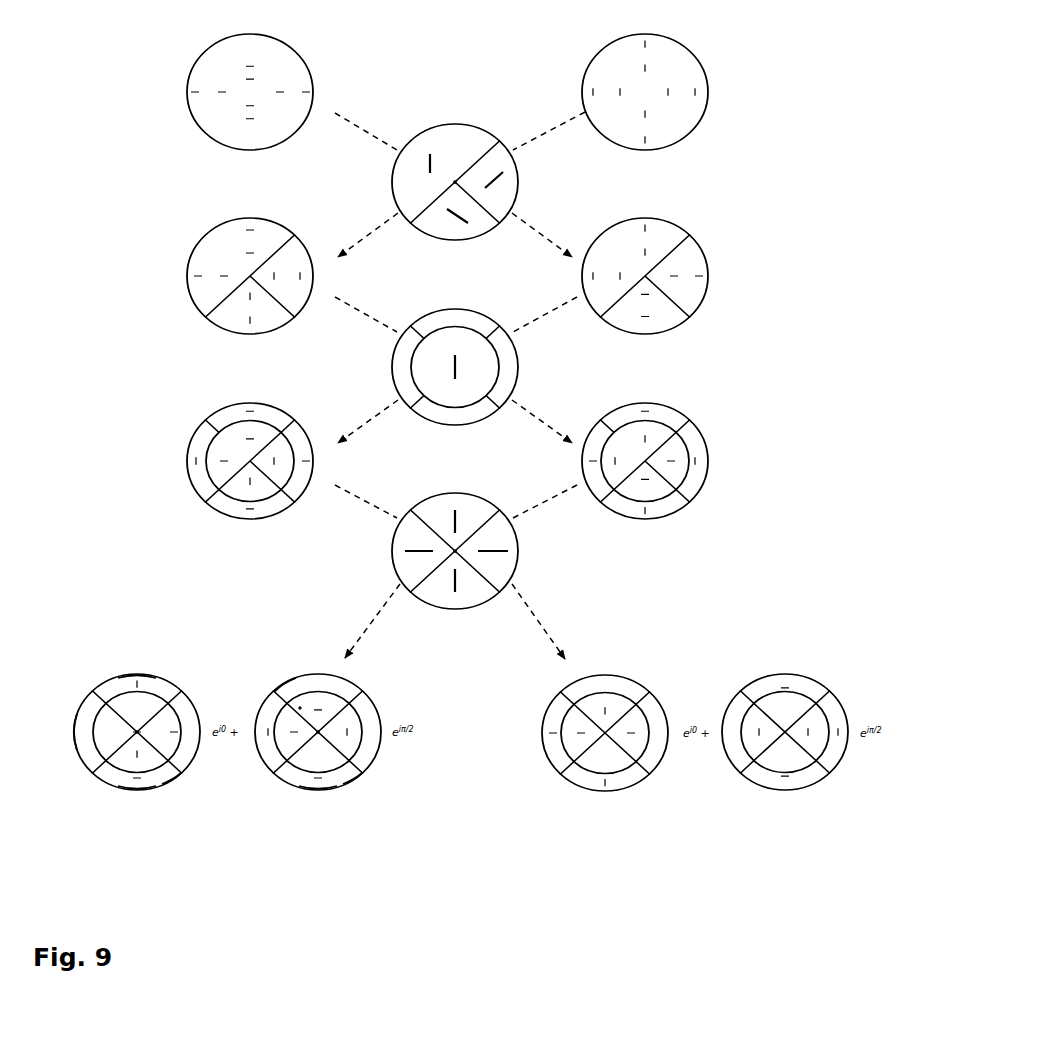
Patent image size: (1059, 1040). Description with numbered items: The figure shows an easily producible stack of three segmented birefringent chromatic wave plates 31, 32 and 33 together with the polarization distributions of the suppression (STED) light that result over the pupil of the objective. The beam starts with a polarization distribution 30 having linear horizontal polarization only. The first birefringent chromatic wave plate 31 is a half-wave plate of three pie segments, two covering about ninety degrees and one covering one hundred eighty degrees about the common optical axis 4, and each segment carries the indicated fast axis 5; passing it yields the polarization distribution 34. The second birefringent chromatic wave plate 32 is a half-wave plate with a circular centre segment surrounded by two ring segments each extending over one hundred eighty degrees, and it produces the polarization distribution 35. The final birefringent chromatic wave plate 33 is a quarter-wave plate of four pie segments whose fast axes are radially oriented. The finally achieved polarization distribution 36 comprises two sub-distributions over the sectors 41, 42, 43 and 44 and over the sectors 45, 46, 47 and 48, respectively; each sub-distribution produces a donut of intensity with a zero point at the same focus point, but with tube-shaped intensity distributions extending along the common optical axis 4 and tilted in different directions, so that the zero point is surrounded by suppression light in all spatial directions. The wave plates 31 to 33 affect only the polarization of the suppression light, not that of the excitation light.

The common optical axis 4 is at (455, 182).
The fast axis 5 is at (501, 177).
The polarization distribution 30 is at (199, 56).
The birefringent chromatic wave plate 31 is at (519, 183).
The birefringent chromatic wave plate 32 is at (519, 368).
The birefringent chromatic wave plate 33 is at (519, 560).
The polarization distribution 34 is at (200, 244).
The polarization distribution 35 is at (200, 429).
The polarization distribution 36 is at (235, 844).
The sector 41 is at (300, 705).
The sector 42 is at (350, 748).
The sector 43 is at (297, 780).
The sector 44 is at (268, 703).
The sector 45 is at (156, 684).
The sector 46 is at (185, 757).
The sector 47 is at (130, 768).
The sector 48 is at (100, 746).